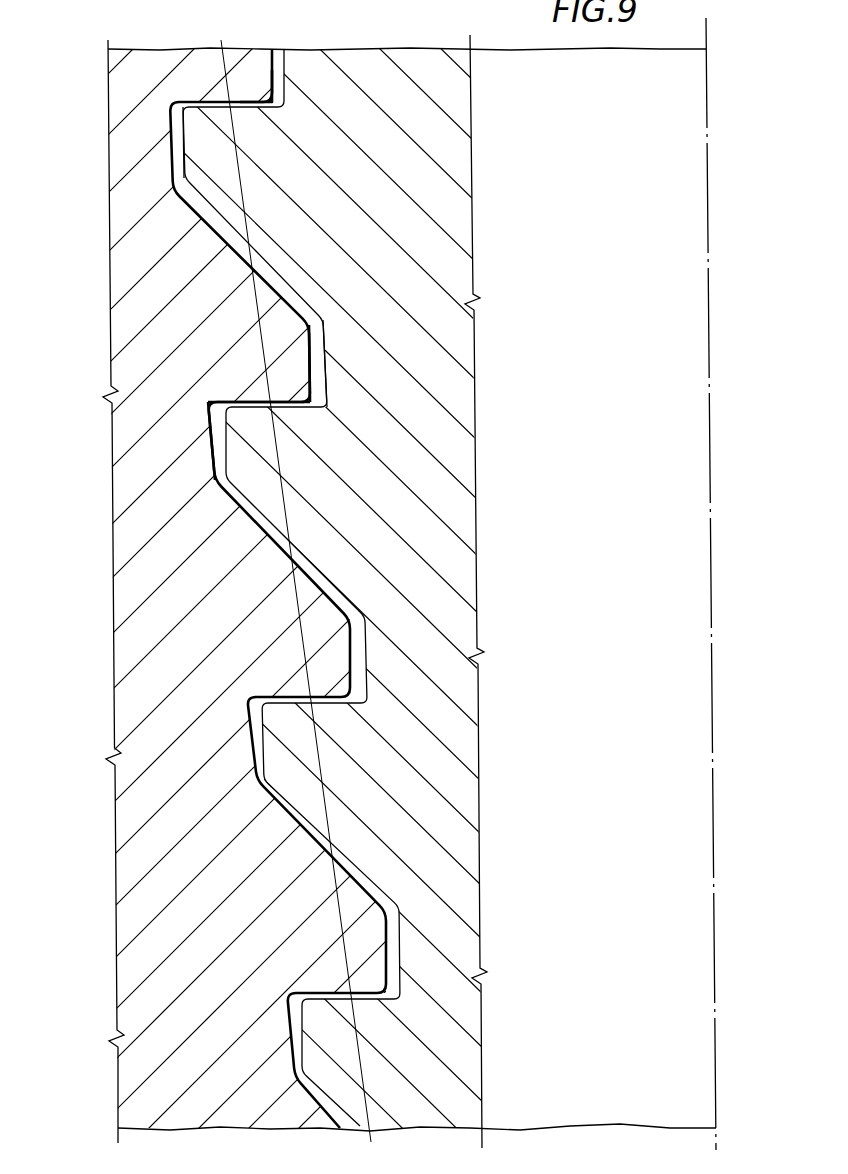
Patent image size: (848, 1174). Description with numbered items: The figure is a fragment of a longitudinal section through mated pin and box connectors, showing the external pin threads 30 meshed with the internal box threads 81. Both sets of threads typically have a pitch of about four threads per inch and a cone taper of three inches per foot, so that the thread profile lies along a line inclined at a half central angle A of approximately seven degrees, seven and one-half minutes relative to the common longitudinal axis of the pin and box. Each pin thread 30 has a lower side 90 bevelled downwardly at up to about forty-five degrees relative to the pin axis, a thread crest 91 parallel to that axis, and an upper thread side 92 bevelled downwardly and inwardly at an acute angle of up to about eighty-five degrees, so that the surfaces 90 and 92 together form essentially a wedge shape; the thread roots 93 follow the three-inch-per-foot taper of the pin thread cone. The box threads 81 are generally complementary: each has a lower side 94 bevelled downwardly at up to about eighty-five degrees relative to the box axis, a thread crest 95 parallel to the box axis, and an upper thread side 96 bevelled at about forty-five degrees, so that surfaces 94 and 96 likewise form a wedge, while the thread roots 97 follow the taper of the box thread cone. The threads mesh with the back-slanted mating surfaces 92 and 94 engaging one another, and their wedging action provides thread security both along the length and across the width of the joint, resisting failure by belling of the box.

The pin thread 30 is at (340, 492).
The box thread 81 is at (217, 578).
The lower side of pin thread 90 is at (222, 222).
The pin thread crest 91 is at (186, 148).
The upper side of pin thread 92 is at (276, 108).
The pin thread root 93 is at (327, 368).
The lower side of box thread 94 is at (226, 400).
The box thread crest 95 is at (308, 352).
The upper side of box thread 96 is at (236, 248).
The box thread root 97 is at (210, 450).
The half central angle A is at (340, 888).